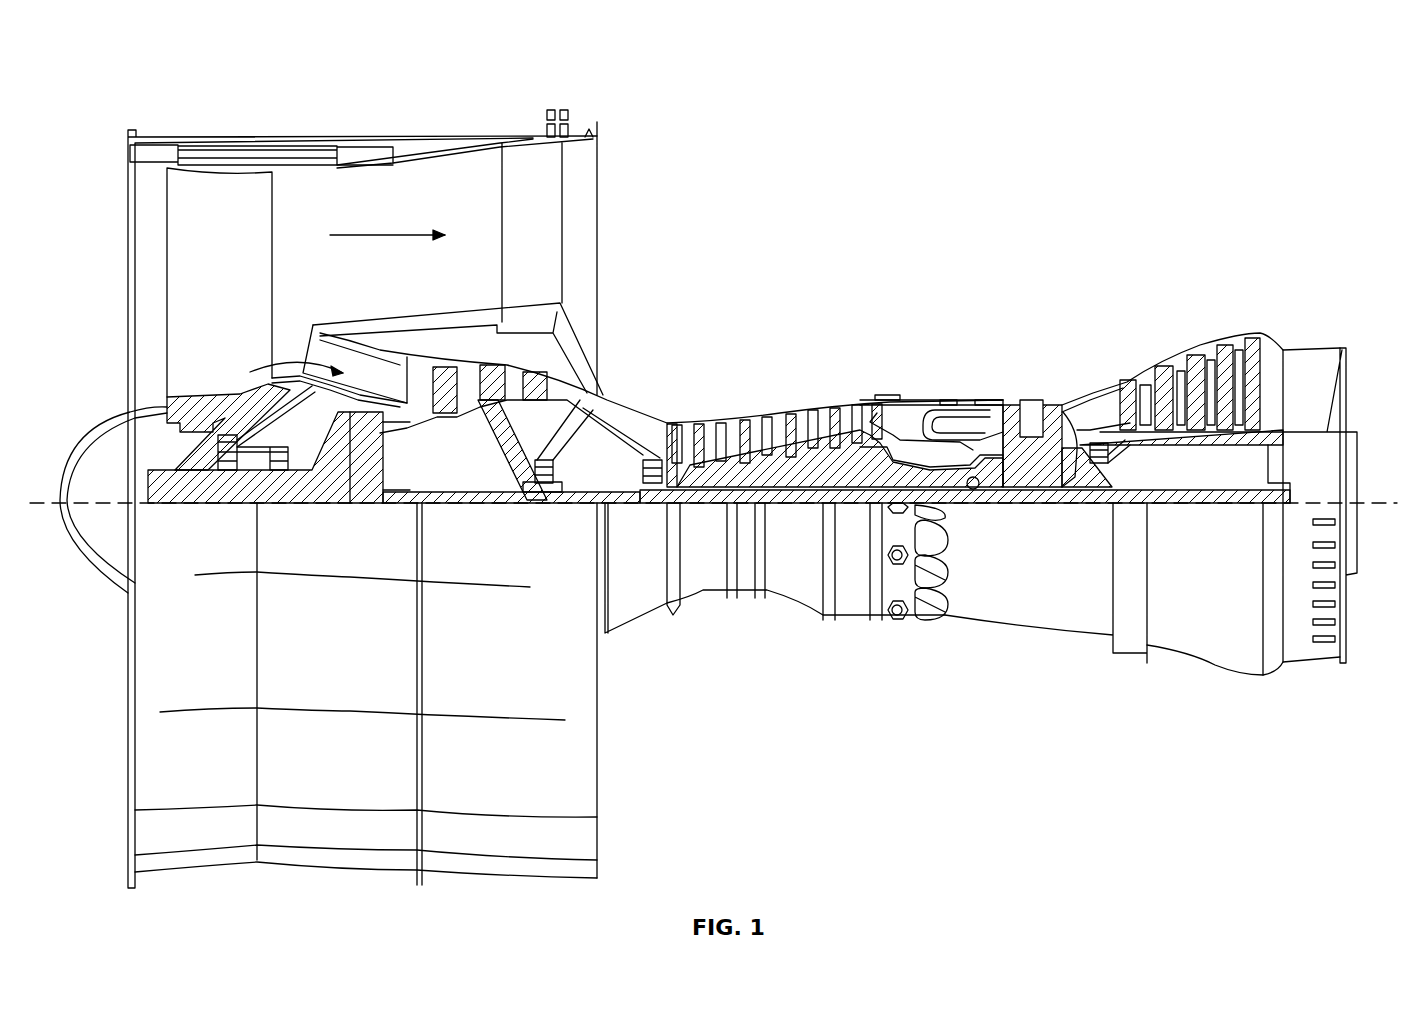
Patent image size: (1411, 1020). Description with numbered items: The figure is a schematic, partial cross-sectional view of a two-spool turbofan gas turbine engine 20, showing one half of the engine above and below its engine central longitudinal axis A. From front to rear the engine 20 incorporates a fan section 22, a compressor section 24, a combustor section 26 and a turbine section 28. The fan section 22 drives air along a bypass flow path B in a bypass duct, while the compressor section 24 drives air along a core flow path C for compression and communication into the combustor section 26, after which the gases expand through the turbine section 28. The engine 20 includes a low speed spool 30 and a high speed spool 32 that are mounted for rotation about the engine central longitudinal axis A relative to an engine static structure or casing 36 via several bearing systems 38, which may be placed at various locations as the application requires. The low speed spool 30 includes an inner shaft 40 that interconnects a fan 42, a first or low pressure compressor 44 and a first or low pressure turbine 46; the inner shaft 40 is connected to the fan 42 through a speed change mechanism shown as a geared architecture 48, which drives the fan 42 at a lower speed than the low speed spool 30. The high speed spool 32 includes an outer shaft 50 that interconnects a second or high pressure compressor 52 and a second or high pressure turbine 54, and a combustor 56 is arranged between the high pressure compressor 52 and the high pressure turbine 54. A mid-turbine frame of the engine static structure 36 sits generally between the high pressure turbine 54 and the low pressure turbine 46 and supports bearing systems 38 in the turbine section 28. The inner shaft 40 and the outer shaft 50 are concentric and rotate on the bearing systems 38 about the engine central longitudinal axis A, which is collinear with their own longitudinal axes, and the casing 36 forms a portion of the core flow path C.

The gas turbine engine 20 is at (1232, 220).
The fan section 22 is at (216, 94).
The compressor section 24 is at (656, 365).
The combustor section 26 is at (1006, 352).
The turbine section 28 is at (1115, 346).
The low speed spool 30 is at (815, 510).
The high speed spool 32 is at (850, 462).
The engine static structure 36 is at (682, 412).
The bearing systems 38 is at (232, 470).
The inner shaft 40 is at (620, 505).
The fan 42 is at (228, 282).
The low pressure compressor 44 is at (513, 380).
The low pressure turbine 46 is at (1197, 352).
The geared architecture 48 is at (374, 486).
The outer shaft 50 is at (975, 505).
The high pressure compressor 52 is at (770, 468).
The high pressure turbine 54 is at (1036, 405).
The combustor 56 is at (950, 430).
The engine central longitudinal axis A is at (1378, 500).
The bypass flow path B is at (392, 232).
The core flow path C is at (268, 363).